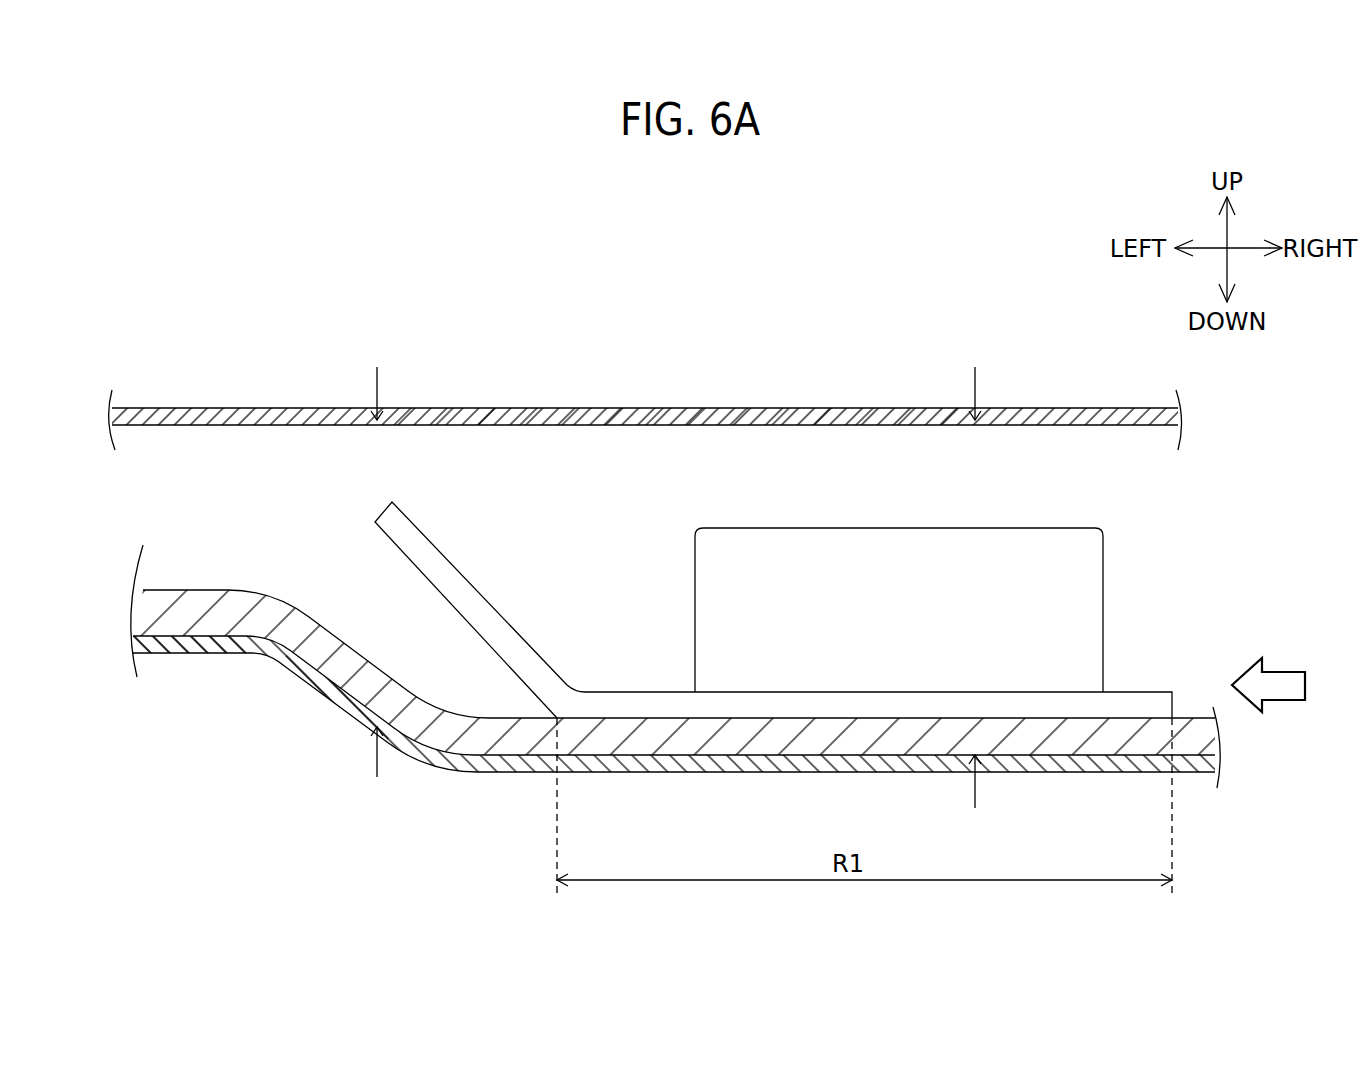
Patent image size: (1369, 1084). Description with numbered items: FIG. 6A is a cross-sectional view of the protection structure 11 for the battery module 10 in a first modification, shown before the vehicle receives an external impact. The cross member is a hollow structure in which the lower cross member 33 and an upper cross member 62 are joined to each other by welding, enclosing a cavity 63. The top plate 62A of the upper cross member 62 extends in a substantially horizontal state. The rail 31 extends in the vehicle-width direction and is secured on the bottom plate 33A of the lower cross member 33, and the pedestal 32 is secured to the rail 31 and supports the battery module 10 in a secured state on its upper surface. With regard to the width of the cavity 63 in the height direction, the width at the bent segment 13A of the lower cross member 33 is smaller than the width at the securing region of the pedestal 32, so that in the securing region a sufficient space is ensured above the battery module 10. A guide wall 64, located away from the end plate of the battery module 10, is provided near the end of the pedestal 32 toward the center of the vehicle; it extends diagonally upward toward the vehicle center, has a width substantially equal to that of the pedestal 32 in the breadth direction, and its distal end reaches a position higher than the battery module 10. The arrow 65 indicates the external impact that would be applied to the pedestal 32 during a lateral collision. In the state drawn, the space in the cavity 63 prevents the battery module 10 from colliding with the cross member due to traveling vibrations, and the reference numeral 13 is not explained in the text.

The battery module 10 is at (727, 543).
The protection structure 11 is at (608, 272).
The second conductor layer 13 is at (811, 349).
The bent segment 13A is at (327, 705).
The rail 31 is at (157, 610).
The pedestal 32 is at (602, 703).
The lower cross member 33 is at (450, 775).
The bottom plate 33A is at (220, 650).
The upper cross member 62 is at (488, 412).
The top plate 62A is at (327, 415).
The cavity 63 is at (1040, 455).
The guide wall 64 is at (417, 552).
The arrow 65 is at (1282, 693).